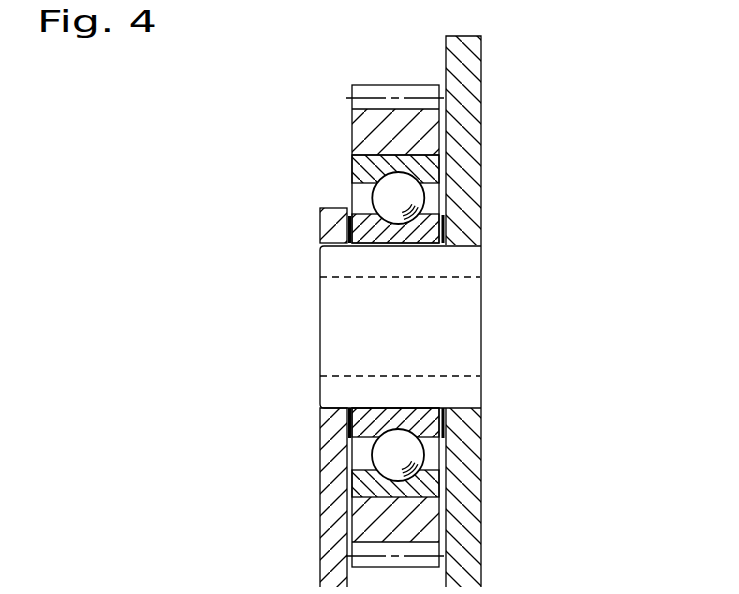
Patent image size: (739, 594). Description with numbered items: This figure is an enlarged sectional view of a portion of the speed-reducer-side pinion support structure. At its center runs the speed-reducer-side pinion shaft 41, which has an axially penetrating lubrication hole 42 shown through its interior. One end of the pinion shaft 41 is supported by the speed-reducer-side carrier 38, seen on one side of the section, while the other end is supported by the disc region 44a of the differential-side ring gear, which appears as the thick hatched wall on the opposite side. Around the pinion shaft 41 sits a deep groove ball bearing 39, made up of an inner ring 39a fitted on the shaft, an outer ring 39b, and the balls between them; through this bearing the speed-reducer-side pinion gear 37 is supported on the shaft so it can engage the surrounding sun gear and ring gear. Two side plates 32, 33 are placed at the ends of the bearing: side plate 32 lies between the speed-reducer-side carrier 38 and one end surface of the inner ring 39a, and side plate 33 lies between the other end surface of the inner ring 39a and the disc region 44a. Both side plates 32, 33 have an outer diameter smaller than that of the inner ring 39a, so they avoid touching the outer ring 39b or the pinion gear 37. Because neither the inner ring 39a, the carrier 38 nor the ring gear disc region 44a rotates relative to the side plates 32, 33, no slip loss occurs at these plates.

The side plate 32 is at (331, 238).
The side plate 33 is at (447, 229).
The speed-reducer-side pinion gear 37 is at (380, 137).
The speed-reducer-side carrier 38 is at (327, 480).
The deep groove ball bearing 39 is at (380, 192).
The inner ring 39a is at (358, 226).
The outer ring 39b is at (378, 163).
The speed-reducer-side pinion shaft 41 is at (465, 261).
The lubrication hole 42 is at (450, 375).
The disc region 44a is at (465, 128).